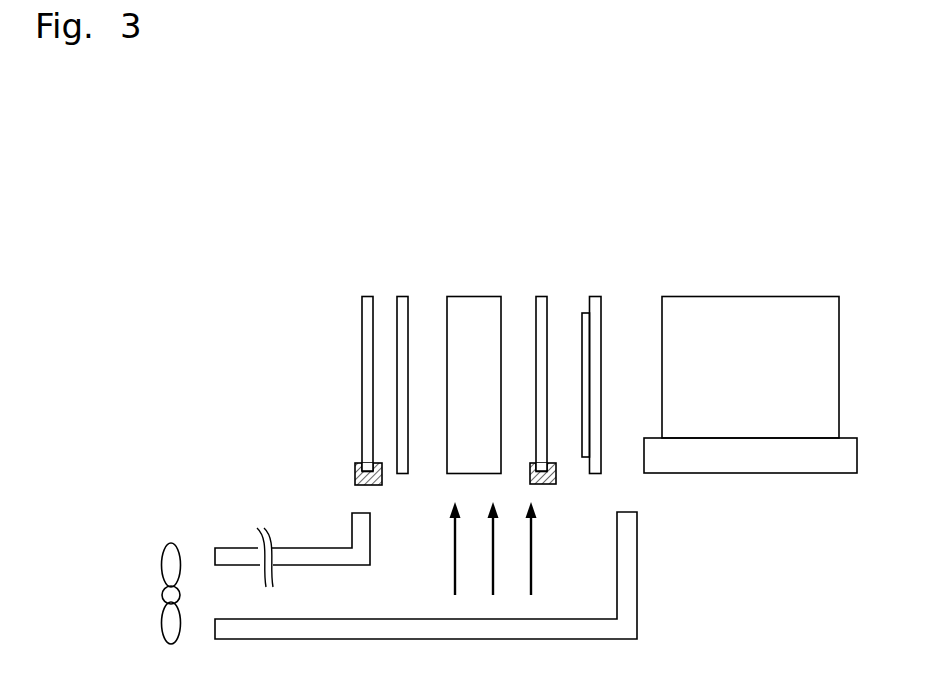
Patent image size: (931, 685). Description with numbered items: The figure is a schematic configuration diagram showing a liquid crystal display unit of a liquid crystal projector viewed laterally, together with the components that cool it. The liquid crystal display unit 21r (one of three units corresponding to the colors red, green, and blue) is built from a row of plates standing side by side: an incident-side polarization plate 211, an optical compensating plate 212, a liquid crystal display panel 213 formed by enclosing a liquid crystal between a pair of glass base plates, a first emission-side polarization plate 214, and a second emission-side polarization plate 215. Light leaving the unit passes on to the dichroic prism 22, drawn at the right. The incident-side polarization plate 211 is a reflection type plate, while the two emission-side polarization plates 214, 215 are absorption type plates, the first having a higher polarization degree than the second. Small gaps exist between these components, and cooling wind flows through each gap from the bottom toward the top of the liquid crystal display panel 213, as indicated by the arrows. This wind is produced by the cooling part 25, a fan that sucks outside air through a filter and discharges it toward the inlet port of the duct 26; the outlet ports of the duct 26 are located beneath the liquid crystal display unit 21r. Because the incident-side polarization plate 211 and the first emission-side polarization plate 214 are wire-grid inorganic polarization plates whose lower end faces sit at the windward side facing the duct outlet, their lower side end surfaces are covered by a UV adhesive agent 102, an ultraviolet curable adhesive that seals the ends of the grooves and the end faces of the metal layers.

The liquid crystal display unit 21r is at (650, 94).
The incident-side polarization plate 211 is at (367, 296).
The optical compensating plate 212 is at (405, 296).
The liquid crystal display panel 213 is at (470, 302).
The first emission-side polarization plate 214 is at (538, 296).
The second emission-side polarization plate 215 is at (593, 296).
The dichroic prism 22 is at (719, 302).
The UV adhesive agent 102 is at (360, 467).
The cooling part 25 is at (172, 542).
The duct 26 is at (333, 548).